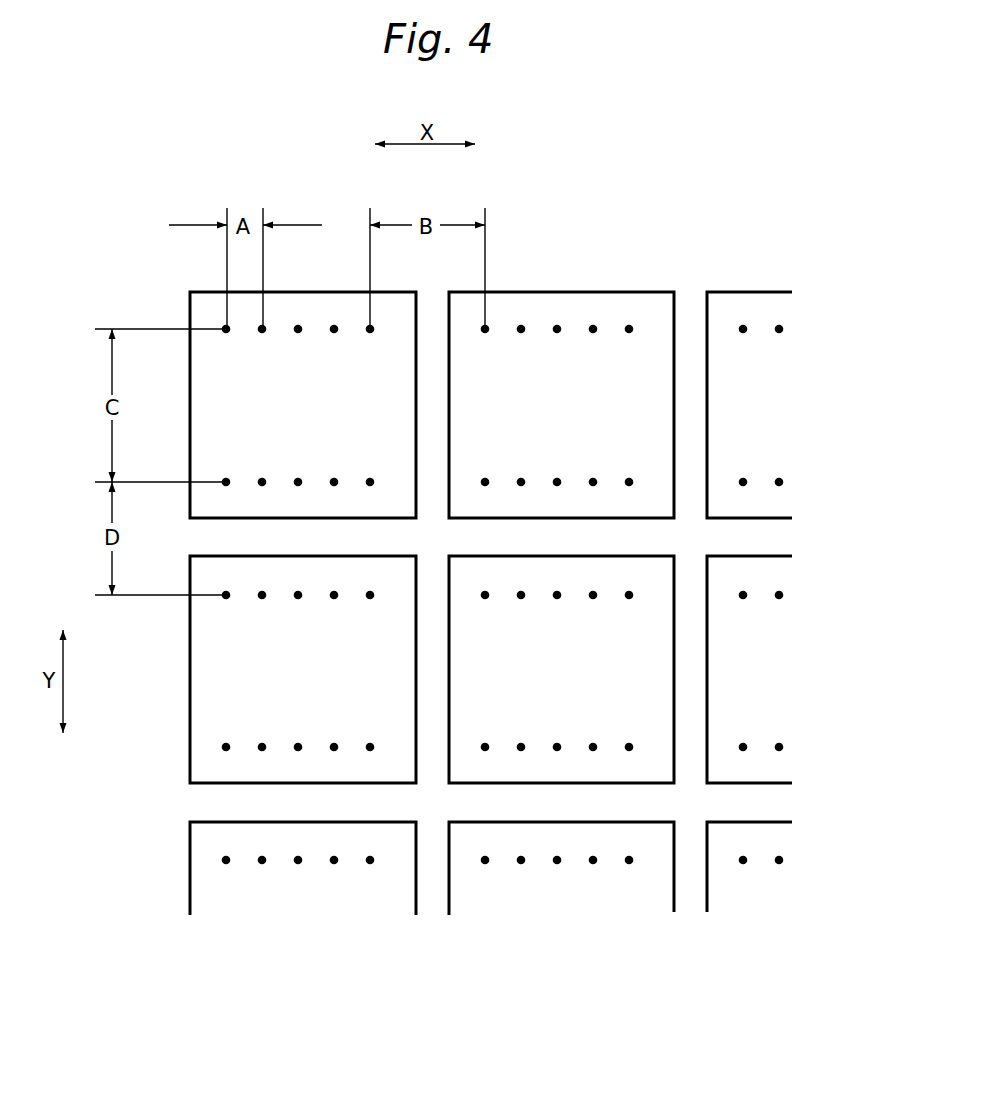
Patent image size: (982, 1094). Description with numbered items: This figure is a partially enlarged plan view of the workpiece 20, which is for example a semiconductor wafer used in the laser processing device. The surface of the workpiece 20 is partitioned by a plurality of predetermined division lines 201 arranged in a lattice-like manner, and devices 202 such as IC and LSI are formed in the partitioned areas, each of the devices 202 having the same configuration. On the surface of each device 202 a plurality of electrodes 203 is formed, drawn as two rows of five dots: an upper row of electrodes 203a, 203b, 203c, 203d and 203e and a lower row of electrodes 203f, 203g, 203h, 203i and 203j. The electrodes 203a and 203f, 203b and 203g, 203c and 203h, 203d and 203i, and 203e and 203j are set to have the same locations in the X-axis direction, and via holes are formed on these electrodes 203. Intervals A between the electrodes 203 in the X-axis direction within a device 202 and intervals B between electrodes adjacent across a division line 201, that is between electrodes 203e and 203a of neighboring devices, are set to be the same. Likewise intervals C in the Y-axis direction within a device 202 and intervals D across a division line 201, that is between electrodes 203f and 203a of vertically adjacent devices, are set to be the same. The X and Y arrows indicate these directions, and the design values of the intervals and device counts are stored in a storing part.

The workpiece 20 is at (777, 209).
The predetermined division line 201 is at (763, 536).
The device 202 is at (491, 603).
The electrode 203 is at (492, 205).
The electrode 203a is at (485, 326).
The electrode 203b is at (521, 326).
The electrode 203c is at (557, 326).
The electrode 203d is at (593, 326).
The electrode 203e is at (629, 326).
The electrode 203f is at (485, 478).
The electrode 203g is at (521, 478).
The electrode 203h is at (557, 478).
The electrode 203i is at (593, 478).
The electrode 203j is at (629, 478).